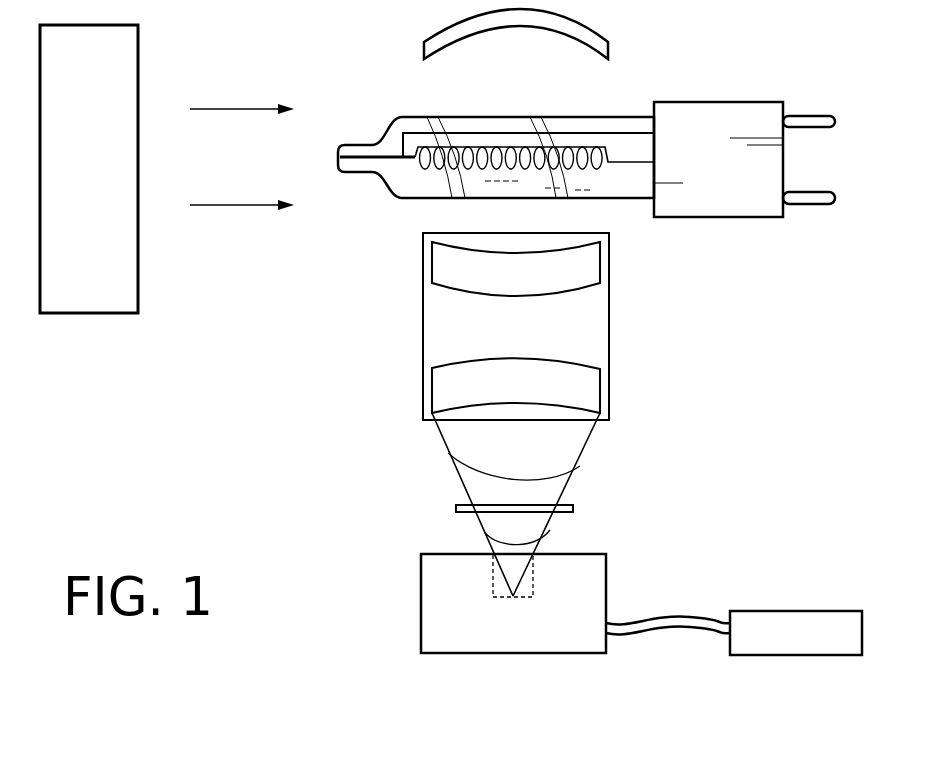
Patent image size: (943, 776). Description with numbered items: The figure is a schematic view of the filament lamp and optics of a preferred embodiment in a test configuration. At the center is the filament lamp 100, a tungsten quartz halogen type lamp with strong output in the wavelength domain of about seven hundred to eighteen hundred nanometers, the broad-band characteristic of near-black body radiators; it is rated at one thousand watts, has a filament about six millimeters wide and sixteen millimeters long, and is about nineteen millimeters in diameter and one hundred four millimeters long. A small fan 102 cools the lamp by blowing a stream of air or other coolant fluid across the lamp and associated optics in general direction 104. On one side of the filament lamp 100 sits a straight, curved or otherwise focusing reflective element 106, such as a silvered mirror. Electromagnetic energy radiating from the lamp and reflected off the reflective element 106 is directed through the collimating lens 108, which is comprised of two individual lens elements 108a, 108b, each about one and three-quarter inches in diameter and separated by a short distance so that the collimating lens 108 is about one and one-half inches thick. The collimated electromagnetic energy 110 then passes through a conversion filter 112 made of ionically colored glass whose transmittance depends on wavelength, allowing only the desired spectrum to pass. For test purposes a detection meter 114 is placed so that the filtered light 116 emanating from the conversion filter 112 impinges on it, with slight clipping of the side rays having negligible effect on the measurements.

The filament lamp 100 is at (767, 200).
The fan 102 is at (87, 313).
The general direction 104 is at (228, 109).
The reflective element 106 is at (593, 40).
The collimating lens 108 is at (558, 326).
The lens element 108a is at (585, 268).
The lens element 108b is at (585, 390).
The collimated electromagnetic energy 110 is at (580, 466).
The conversion filter 112 is at (455, 509).
The detection meter 114 is at (421, 580).
The filtered light 116 is at (550, 530).